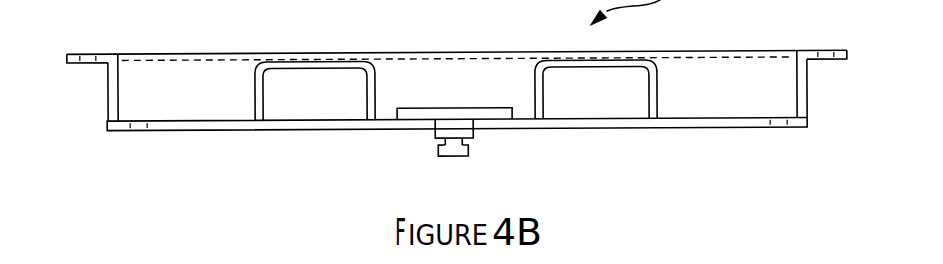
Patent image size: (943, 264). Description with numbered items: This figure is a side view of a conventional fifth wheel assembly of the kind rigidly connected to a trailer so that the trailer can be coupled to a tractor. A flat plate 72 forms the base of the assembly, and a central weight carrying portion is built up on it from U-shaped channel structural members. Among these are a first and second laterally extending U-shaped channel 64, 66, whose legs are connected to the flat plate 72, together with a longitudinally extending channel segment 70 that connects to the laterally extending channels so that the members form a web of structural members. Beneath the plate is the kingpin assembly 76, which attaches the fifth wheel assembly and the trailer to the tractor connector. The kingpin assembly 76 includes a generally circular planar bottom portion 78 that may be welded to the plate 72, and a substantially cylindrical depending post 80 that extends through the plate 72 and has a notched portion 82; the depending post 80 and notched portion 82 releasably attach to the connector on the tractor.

The first laterally extending U-shaped channel 64 is at (337, 68).
The second laterally extending U-shaped channel 66 is at (620, 68).
The second longitudinally extending channel segment 70 is at (522, 52).
The flat plate 72 is at (232, 120).
The kingpin assembly 76 is at (412, 148).
The planar bottom portion 78 is at (453, 108).
The depending post 80 is at (468, 151).
The notched portion 82 is at (463, 141).